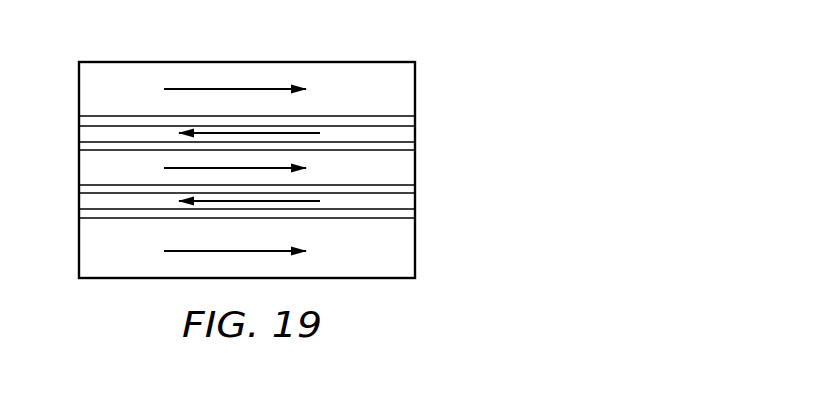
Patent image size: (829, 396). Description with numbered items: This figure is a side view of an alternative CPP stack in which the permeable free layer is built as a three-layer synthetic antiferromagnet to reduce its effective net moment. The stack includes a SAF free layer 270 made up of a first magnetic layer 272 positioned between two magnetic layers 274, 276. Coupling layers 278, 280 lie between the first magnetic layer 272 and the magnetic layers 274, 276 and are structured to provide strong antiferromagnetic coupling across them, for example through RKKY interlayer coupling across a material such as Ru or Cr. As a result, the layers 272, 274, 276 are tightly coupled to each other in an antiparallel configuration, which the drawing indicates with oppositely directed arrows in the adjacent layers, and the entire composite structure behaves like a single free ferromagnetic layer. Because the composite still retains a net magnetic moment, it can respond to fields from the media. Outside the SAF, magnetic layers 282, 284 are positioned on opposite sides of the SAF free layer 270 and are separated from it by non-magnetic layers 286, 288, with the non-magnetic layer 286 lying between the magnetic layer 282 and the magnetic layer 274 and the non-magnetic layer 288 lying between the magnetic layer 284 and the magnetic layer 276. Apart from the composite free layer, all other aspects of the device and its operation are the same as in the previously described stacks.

The SAF free layer 270 is at (73, 127).
The first magnetic layer 272 is at (415, 170).
The magnetic layer 274 is at (415, 133).
The magnetic layer 276 is at (415, 209).
The coupling layer 278 is at (415, 146).
The coupling layer 280 is at (415, 190).
The magnetic layer 282 is at (364, 80).
The magnetic layer 284 is at (370, 268).
The non-magnetic layer 286 is at (415, 126).
The non-magnetic layer 288 is at (415, 216).